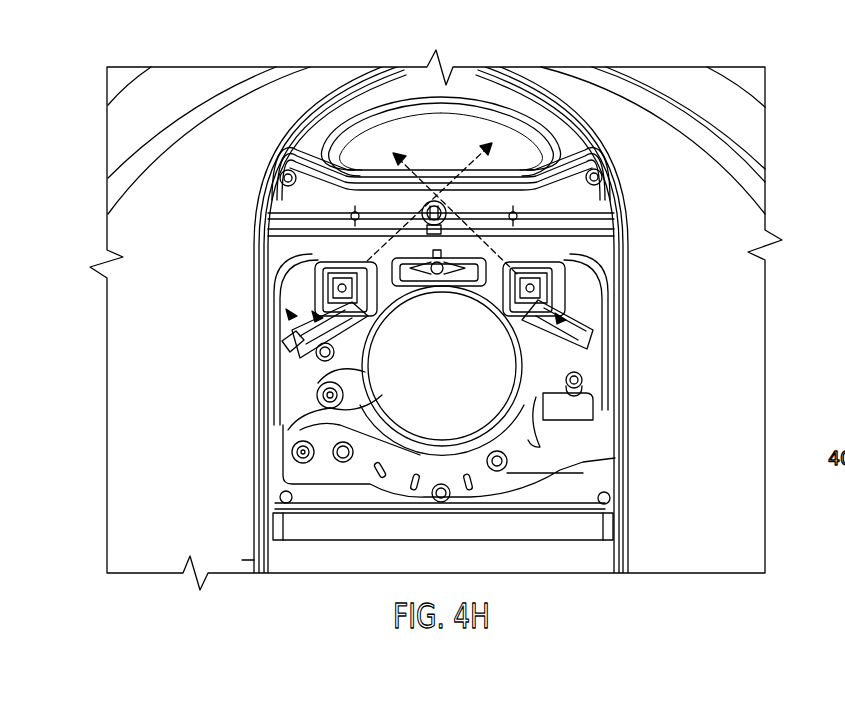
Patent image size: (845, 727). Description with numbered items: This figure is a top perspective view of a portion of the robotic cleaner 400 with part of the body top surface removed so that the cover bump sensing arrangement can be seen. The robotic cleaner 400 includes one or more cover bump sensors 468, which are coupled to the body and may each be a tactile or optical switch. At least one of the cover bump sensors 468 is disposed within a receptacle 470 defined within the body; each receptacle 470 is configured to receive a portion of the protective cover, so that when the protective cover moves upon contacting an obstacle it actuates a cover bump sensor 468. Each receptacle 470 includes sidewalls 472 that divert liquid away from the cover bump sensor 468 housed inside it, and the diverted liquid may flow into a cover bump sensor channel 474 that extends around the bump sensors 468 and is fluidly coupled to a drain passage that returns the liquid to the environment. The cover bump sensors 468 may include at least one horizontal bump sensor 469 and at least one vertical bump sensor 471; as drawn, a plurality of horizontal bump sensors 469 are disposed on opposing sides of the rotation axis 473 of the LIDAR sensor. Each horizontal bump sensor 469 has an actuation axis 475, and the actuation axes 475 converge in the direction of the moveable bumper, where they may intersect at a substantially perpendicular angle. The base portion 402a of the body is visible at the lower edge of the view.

The robotic cleaner 400 is at (766, 100).
The base portion 402a is at (247, 552).
The cover bump sensor 468 is at (281, 288).
The horizontal bump sensor 469 is at (282, 341).
The receptacle 470 is at (294, 314).
The vertical bump sensor 471 is at (322, 278).
The sidewalls 472 is at (290, 336).
The rotation axis 473 is at (447, 333).
The cover bump sensor channel 474 is at (601, 268).
The actuation axis 475 is at (404, 168).